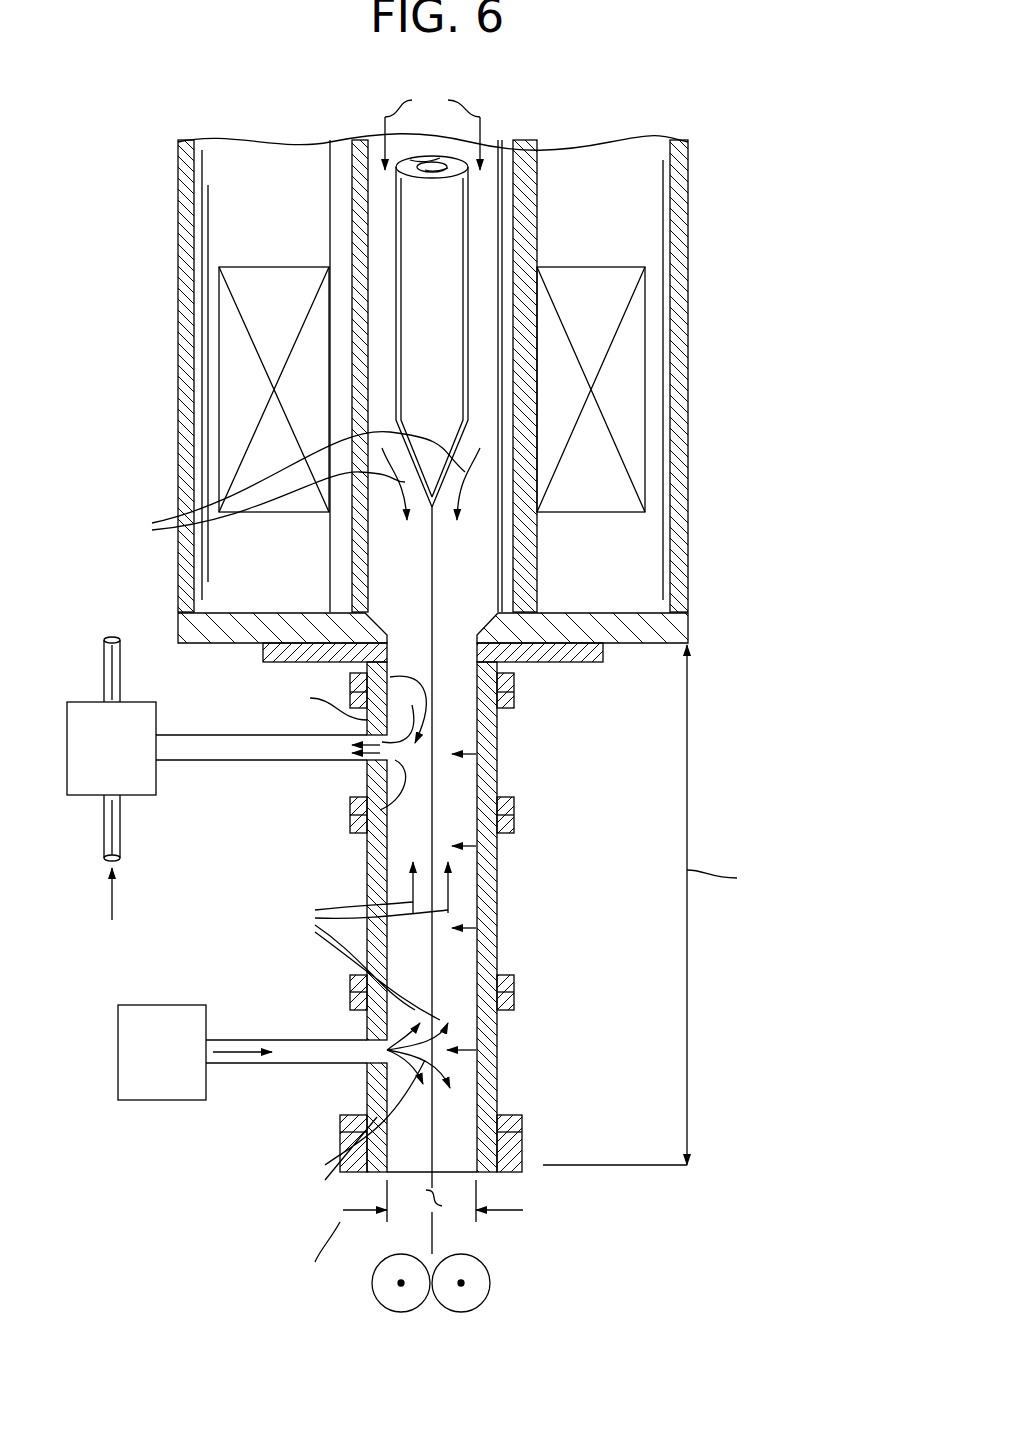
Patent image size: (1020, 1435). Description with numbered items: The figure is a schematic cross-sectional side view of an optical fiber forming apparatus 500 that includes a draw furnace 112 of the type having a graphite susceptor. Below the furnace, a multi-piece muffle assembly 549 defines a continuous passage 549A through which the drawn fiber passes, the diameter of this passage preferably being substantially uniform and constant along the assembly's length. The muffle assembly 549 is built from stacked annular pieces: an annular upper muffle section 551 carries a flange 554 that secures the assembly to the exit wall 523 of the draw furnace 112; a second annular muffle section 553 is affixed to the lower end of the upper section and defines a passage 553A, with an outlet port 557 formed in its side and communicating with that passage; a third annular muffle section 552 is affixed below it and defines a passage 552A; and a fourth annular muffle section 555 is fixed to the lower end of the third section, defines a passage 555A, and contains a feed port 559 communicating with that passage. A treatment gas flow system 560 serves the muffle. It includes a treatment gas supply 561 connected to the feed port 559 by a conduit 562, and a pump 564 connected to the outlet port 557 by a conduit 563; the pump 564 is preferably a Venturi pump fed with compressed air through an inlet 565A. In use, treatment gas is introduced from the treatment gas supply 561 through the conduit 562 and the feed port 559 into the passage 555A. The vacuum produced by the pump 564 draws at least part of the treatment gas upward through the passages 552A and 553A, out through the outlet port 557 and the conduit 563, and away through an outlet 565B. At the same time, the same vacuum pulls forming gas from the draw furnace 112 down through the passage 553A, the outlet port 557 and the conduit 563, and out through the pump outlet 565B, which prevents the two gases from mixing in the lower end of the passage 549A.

The optical fiber forming apparatus 500 is at (745, 153).
The draw furnace 112 is at (690, 350).
The exit wall 523 is at (688, 640).
The flange 554 is at (601, 662).
The multi-piece muffle assembly 549 is at (560, 857).
The annular upper muffle section 551 is at (514, 678).
The second annular muffle section 553 is at (510, 788).
The third annular muffle section 552 is at (498, 952).
The fourth annular muffle section 555 is at (498, 1080).
The passage 553A is at (498, 760).
The passage 552A is at (498, 850).
The continuous passage 549A is at (498, 930).
The passage 555A is at (498, 1058).
The outlet port 557 is at (365, 775).
The conduit 563 is at (205, 762).
The pump 564 is at (138, 798).
The inlet 565A is at (122, 848).
The outlet 565B is at (122, 648).
The treatment gas flow system 560 is at (160, 1107).
The treatment gas supply 561 is at (155, 1005).
The conduit 562 is at (233, 1063).
The feed port 559 is at (367, 1072).